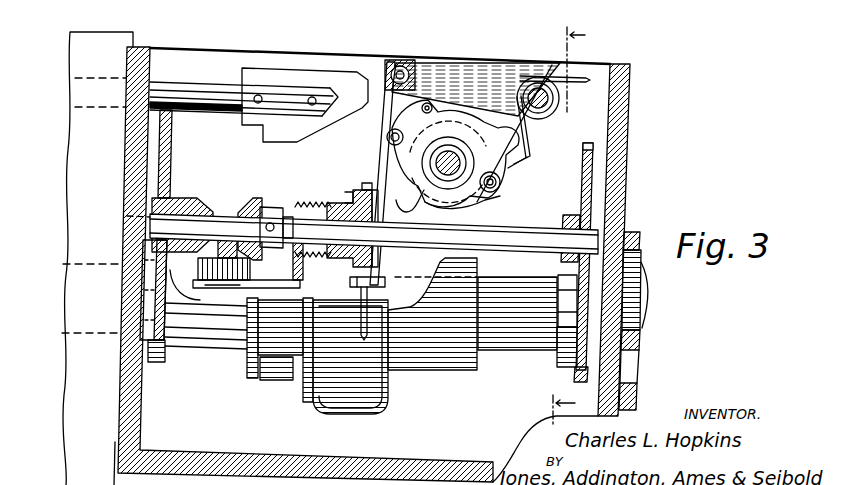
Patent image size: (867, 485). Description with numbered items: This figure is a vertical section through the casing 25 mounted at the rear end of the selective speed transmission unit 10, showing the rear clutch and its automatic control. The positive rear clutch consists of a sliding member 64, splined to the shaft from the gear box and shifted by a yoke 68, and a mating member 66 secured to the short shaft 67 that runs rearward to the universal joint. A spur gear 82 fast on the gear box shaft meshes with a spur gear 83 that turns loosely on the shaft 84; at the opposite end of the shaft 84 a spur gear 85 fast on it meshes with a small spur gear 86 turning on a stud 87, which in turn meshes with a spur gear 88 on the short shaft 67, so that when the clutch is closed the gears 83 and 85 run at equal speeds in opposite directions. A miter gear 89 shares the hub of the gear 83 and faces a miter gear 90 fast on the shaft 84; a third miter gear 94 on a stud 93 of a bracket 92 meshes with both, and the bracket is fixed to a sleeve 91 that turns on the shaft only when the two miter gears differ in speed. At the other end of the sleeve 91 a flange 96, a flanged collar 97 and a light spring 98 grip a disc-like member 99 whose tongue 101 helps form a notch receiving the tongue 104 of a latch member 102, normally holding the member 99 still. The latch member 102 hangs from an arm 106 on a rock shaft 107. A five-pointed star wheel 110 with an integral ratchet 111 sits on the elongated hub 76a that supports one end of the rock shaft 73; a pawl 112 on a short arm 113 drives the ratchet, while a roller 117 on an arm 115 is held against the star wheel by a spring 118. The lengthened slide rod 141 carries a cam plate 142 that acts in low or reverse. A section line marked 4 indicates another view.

The selective speed transmission unit 10 is at (85, 139).
The casing 25 is at (633, 100).
The short shaft 67 is at (634, 301).
The slide rod 141 is at (183, 88).
The cam plate 142 is at (276, 78).
The spur gear 83 is at (172, 151).
The miter gear 89 is at (197, 197).
The miter gear 90 is at (253, 198).
The third miter gear 94 is at (250, 269).
The stud 93 is at (230, 272).
The bracket 92 is at (300, 284).
The light spring 98 is at (302, 201).
The sleeve 91 is at (336, 203).
The flanged collar 97 is at (350, 191).
The disc-like member 99 is at (365, 185).
The flange 96 is at (376, 194).
The latch member 102 is at (386, 130).
The arm 106 is at (475, 88).
The rock shaft 107 is at (537, 88).
The spring 118 is at (532, 130).
The arm 115 is at (521, 162).
The five-point ratchet 111 is at (431, 201).
The rock shaft 73 is at (456, 152).
The pawl 112 is at (397, 128).
The short arm 113 is at (429, 102).
The roller 117 is at (501, 186).
The five-pointed star wheel 110 is at (488, 202).
The elongated hub 76a is at (426, 190).
The section line 4- 4 is at (566, 224).
The spur gear 85 is at (595, 188).
The shaft 84 is at (546, 234).
The spur gear 82 is at (164, 354).
The sliding clutch member 64 is at (247, 370).
The yoke 68 is at (275, 378).
The clutch member 66 is at (388, 384).
The spur gear 88 is at (577, 268).
The stud 87 is at (560, 352).
The small spur gear 86 is at (590, 378).
The tongue 104 is at (385, 283).
The tongue 101 is at (360, 306).